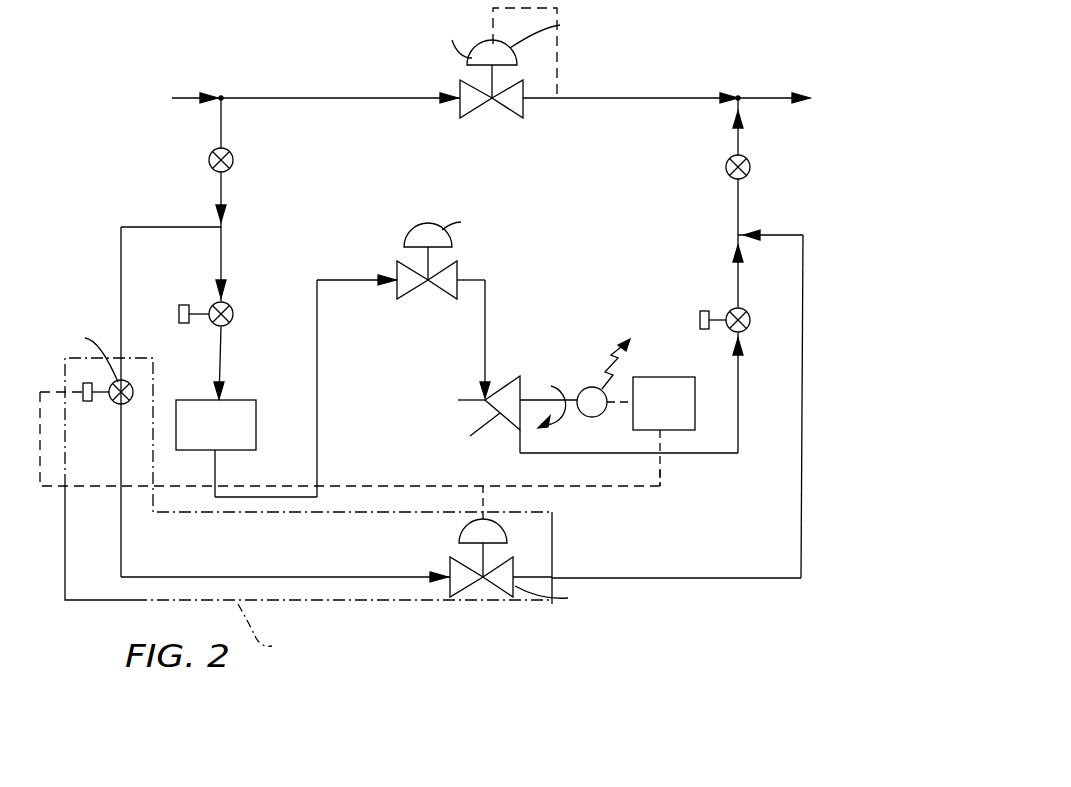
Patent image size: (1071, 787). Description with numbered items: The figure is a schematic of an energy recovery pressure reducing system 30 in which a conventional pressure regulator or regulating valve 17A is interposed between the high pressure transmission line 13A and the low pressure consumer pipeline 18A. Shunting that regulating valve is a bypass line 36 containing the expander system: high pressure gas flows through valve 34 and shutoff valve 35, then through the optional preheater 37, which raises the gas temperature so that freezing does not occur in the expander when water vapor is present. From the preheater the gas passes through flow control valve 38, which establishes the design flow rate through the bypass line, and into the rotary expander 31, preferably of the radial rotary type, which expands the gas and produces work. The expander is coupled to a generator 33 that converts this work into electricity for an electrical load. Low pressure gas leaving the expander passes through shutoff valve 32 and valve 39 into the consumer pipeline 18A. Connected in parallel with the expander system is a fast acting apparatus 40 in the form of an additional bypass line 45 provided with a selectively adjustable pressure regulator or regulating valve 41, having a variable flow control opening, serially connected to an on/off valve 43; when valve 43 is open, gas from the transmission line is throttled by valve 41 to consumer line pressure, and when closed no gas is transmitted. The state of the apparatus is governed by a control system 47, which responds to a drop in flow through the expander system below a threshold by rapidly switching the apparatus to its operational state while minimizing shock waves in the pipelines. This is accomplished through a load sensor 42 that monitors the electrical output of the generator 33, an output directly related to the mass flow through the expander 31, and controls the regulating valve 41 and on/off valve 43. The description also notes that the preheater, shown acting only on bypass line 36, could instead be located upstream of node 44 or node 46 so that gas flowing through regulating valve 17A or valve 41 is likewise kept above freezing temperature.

The high pressure transmission line 13A is at (184, 97).
The node 44 is at (224, 96).
The pressure regulator or regulating valve 17A is at (520, 120).
The consumer pipeline 18A is at (766, 96).
The valve 34 is at (234, 158).
The node 46 is at (226, 228).
The shutoff valve 35 is at (230, 306).
The preheater 37 is at (252, 400).
The flow control valve 38 is at (436, 296).
The rotary expander 31 is at (508, 384).
The generator 33 is at (582, 387).
The load sensor 42 is at (669, 377).
The shutoff valve 32 is at (744, 309).
The valve 39 is at (745, 157).
The energy recovery pressure reducing system 30 is at (812, 383).
The additional bypass line 45 is at (607, 578).
The selectively adjustable pressure regulator or regulating valve 41 is at (503, 598).
The bypass line 36 is at (352, 530).
The fast acting apparatus 40 is at (95, 600).
The on/off valve 43 is at (118, 404).
The control system 47 is at (624, 469).